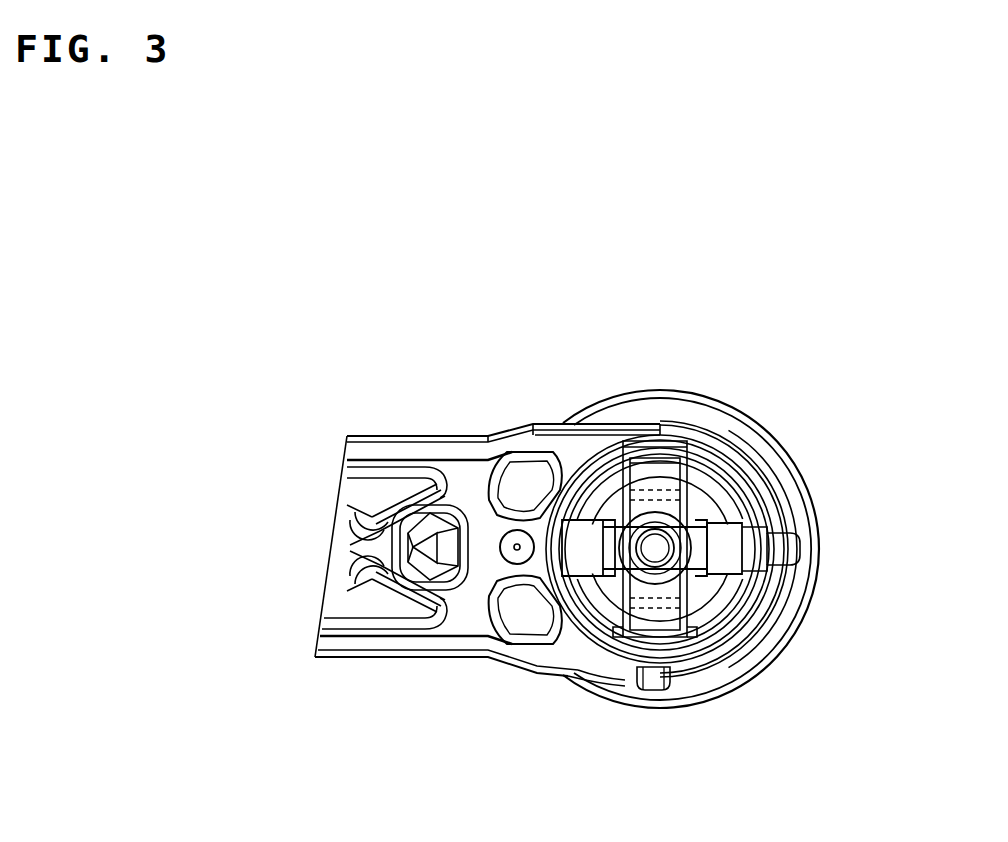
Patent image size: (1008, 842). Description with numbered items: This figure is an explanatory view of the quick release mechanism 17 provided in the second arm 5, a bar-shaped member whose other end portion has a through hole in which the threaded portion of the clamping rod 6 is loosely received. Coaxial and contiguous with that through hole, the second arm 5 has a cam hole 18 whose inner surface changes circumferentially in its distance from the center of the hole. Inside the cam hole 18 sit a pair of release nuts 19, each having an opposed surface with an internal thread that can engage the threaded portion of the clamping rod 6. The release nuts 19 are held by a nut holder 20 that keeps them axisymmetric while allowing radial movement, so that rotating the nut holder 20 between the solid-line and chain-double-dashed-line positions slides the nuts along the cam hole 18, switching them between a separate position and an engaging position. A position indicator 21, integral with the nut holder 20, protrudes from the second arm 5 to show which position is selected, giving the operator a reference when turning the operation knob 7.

The second arm 5 is at (427, 443).
The clamping rod 6 is at (655, 546).
The operation knob 7 is at (800, 493).
The quick release mechanism 17 is at (594, 484).
The cam hole 18 is at (600, 650).
The release nuts 19 is at (552, 640).
The nut holder 20 is at (703, 503).
The position indicator 21 is at (800, 547).